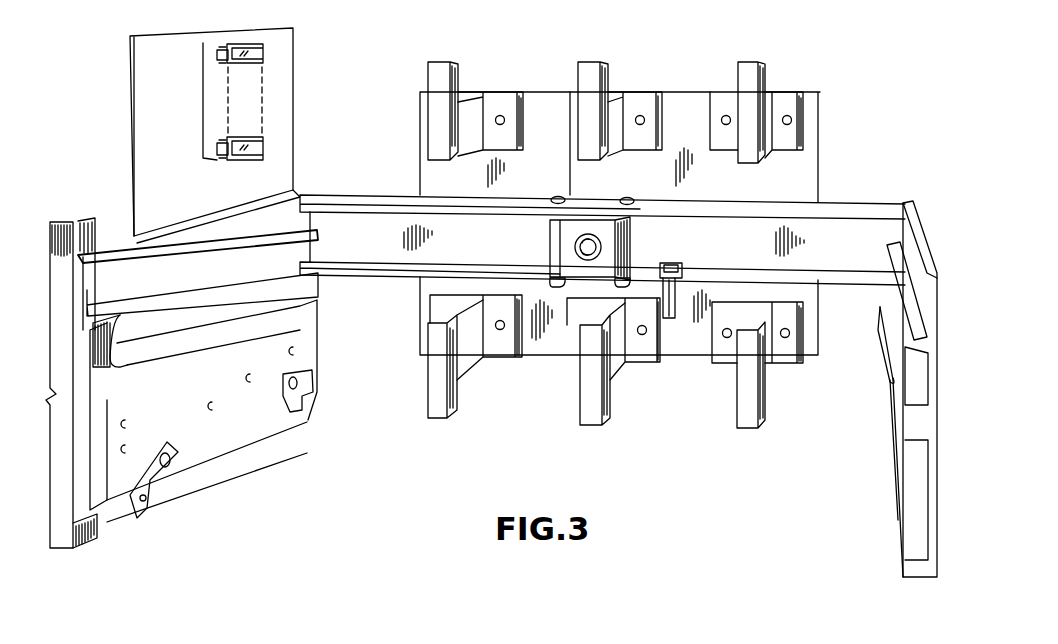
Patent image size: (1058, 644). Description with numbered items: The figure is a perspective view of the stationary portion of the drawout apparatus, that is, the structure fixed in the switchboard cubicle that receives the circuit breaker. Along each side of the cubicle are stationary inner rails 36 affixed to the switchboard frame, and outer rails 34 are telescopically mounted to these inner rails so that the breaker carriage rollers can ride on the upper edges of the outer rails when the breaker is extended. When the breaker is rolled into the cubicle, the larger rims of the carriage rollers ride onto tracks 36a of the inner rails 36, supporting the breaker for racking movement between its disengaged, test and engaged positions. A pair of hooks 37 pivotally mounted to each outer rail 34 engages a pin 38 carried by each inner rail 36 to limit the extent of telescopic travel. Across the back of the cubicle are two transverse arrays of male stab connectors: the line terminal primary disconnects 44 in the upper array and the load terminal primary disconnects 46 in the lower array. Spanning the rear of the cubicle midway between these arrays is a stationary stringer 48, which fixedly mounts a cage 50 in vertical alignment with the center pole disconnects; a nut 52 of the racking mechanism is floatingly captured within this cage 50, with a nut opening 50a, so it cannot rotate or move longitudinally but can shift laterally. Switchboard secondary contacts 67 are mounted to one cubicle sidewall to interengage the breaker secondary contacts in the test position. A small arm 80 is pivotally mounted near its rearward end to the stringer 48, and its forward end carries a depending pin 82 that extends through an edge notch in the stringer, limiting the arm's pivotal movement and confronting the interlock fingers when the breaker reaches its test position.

The outer rails 34 is at (223, 371).
The inner rails 36 is at (203, 228).
The tracks 36a is at (177, 277).
The hooks 37 is at (297, 410).
The pin 38 is at (146, 500).
The line terminal primary disconnects 44 is at (432, 73).
The load terminal primary disconnects 46 is at (435, 407).
The stationary stringer 48 is at (848, 220).
The cage 50 is at (632, 250).
The nut 50a is at (575, 251).
The nut 52 is at (588, 240).
The switchboard secondary contacts 67 is at (248, 48).
The arm 80 is at (684, 263).
The pin 82 is at (676, 317).